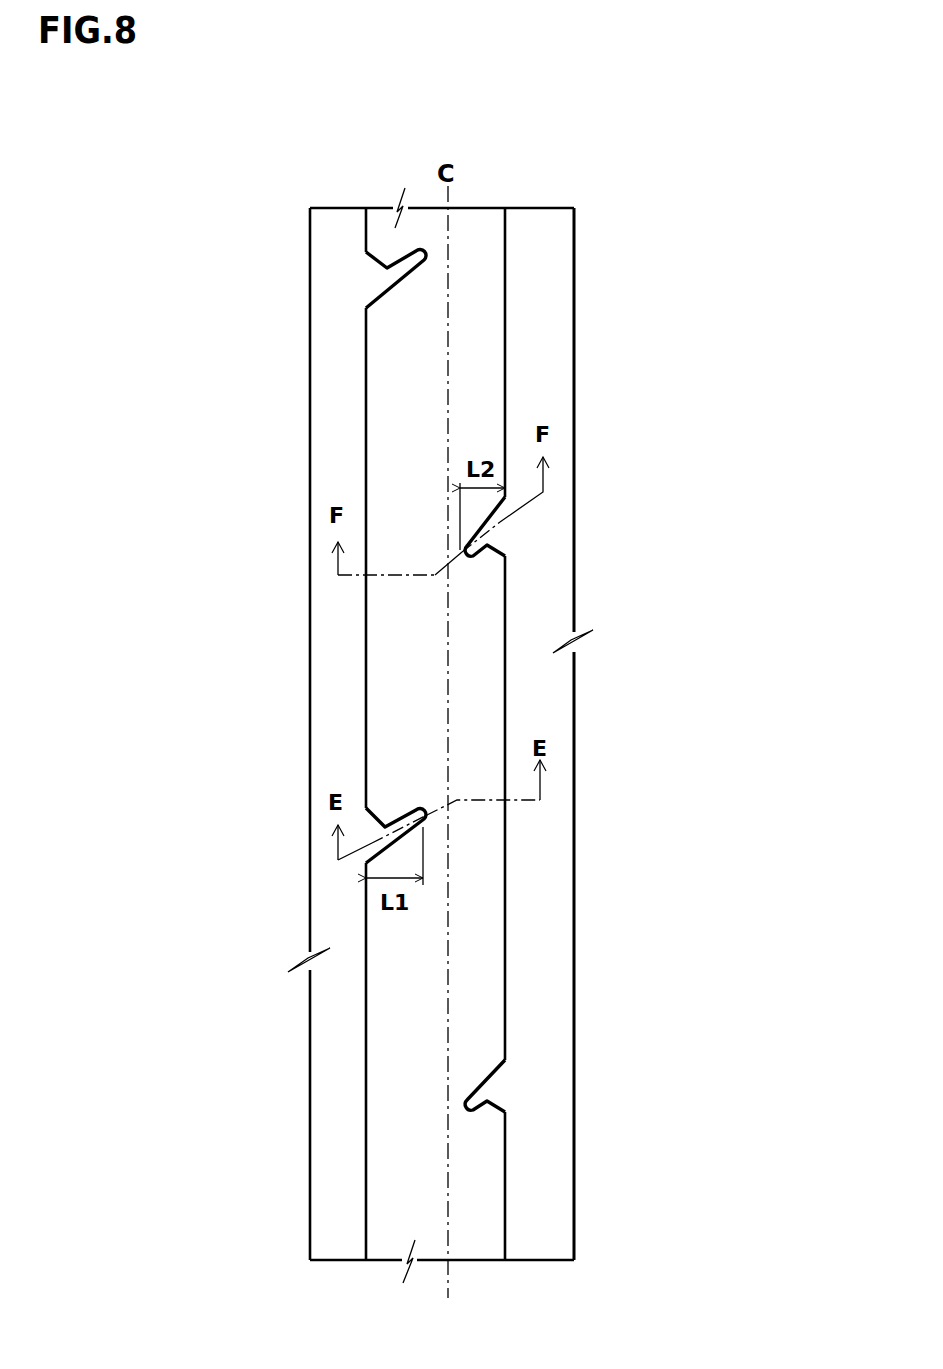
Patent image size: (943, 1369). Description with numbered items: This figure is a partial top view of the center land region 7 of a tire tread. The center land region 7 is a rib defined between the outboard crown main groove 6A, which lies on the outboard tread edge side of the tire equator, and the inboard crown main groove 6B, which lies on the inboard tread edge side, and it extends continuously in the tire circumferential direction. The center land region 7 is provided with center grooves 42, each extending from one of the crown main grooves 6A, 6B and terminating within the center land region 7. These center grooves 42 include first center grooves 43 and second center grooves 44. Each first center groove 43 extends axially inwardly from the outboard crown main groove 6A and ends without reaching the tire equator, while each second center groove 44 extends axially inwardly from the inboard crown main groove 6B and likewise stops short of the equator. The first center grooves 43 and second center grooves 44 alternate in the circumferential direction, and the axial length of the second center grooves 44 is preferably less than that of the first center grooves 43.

The outboard crown main groove 6A is at (338, 258).
The inboard crown main groove 6B is at (538, 258).
The center land region 7 is at (477, 250).
The center grooves 42 is at (386, 281).
The first center groove 43 is at (398, 820).
The second center groove 44 is at (489, 1091).